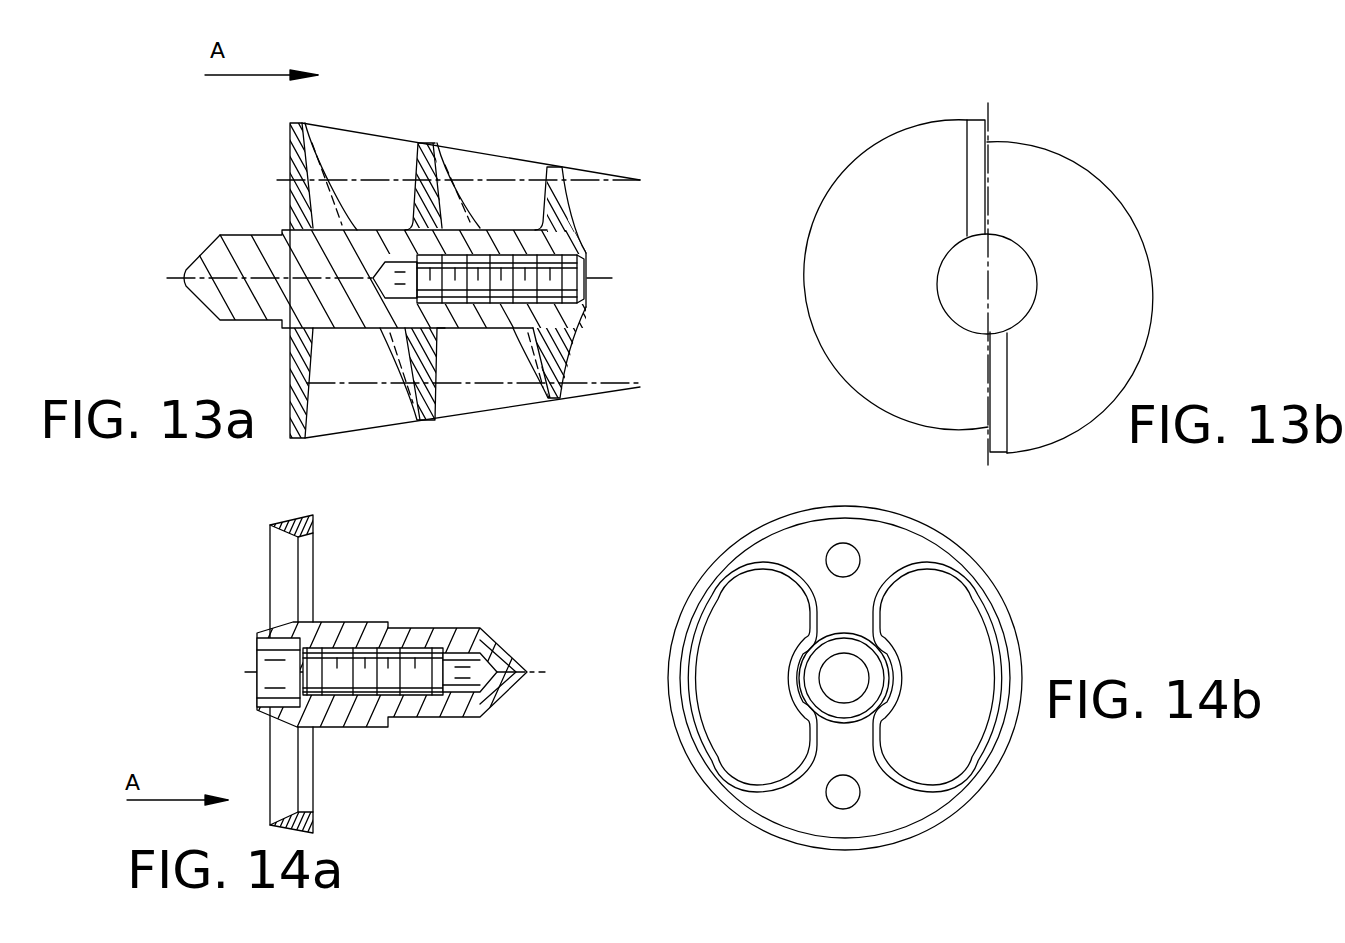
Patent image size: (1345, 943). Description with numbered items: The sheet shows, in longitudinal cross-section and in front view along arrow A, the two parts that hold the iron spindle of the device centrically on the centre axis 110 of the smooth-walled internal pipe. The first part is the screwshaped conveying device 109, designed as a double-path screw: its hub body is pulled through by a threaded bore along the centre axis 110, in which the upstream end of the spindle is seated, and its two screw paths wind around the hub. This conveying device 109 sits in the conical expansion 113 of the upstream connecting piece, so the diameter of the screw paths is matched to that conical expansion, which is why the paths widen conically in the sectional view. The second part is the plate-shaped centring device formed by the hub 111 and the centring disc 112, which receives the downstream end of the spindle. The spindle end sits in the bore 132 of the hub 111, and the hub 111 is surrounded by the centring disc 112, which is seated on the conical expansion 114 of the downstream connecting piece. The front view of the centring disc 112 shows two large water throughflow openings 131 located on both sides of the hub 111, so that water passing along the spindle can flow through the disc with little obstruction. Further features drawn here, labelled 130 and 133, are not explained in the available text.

In FIG. 13a, the screwshaped conveying device 109 is at (218, 300).
In FIG. 13b, the screwshaped conveying device 109 is at (952, 306).
In FIG. 13a, the centre axis 110 is at (604, 284).
In FIG. 14a, the centre axis 110 is at (538, 670).
In FIG. 14a, the hub 111 is at (357, 637).
In FIG. 14a, the centring disc 112 is at (275, 552).
In FIG. 14b, the centring disc 112 is at (970, 562).
In FIG. 13a, the conical expansion 113 is at (481, 152).
In FIG. 13a, the conical expansion 114 is at (472, 372).
In FIG. 13a, the threaded insert 130 is at (581, 258).
In FIG. 14b, the water throughflow openings 131 is at (907, 773).
In FIG. 14a, the bore 132 is at (418, 687).
In FIG. 14b, the bore 132 is at (833, 682).
In FIG. 13a, the blade end 133 is at (290, 158).
In FIG. 13b, the blade end 133 is at (1005, 158).